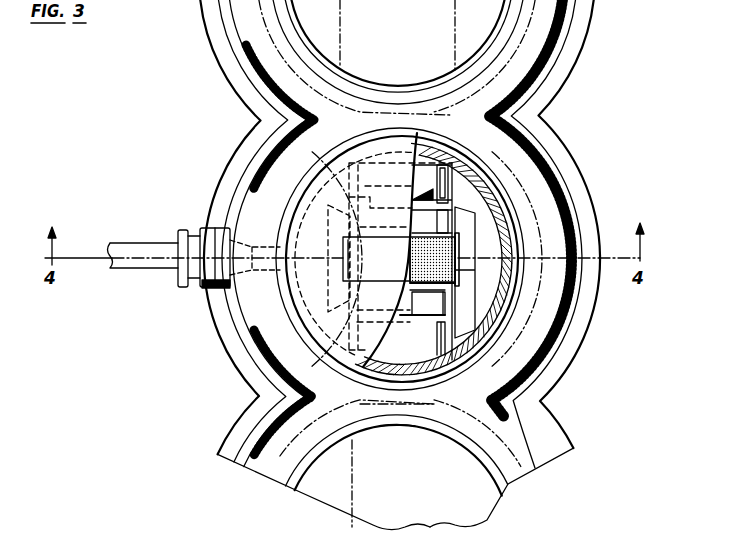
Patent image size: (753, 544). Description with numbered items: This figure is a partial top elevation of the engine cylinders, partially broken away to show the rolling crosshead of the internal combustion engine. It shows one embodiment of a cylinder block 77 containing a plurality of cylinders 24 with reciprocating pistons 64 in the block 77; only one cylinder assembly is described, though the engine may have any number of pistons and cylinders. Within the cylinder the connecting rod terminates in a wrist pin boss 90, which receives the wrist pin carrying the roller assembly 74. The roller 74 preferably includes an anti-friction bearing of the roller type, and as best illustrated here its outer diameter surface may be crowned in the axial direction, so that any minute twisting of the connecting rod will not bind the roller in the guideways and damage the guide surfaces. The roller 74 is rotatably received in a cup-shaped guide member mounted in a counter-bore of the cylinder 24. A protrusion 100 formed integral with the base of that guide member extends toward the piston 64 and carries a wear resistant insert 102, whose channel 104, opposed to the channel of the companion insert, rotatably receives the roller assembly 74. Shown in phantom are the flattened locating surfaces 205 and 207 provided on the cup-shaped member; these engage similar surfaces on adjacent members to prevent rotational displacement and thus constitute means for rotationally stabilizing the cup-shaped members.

The cylinder 24 is at (545, 28).
The cylinder block 77 is at (272, 163).
The protrusion 100 is at (473, 196).
The wear resistant insert 102 is at (470, 238).
The roller assembly 74 is at (455, 268).
The channel 104 is at (430, 300).
The wrist pin boss 90 is at (455, 290).
The piston 64 is at (322, 288).
The locating surface 205 is at (393, 405).
The locating surface 207 is at (396, 420).